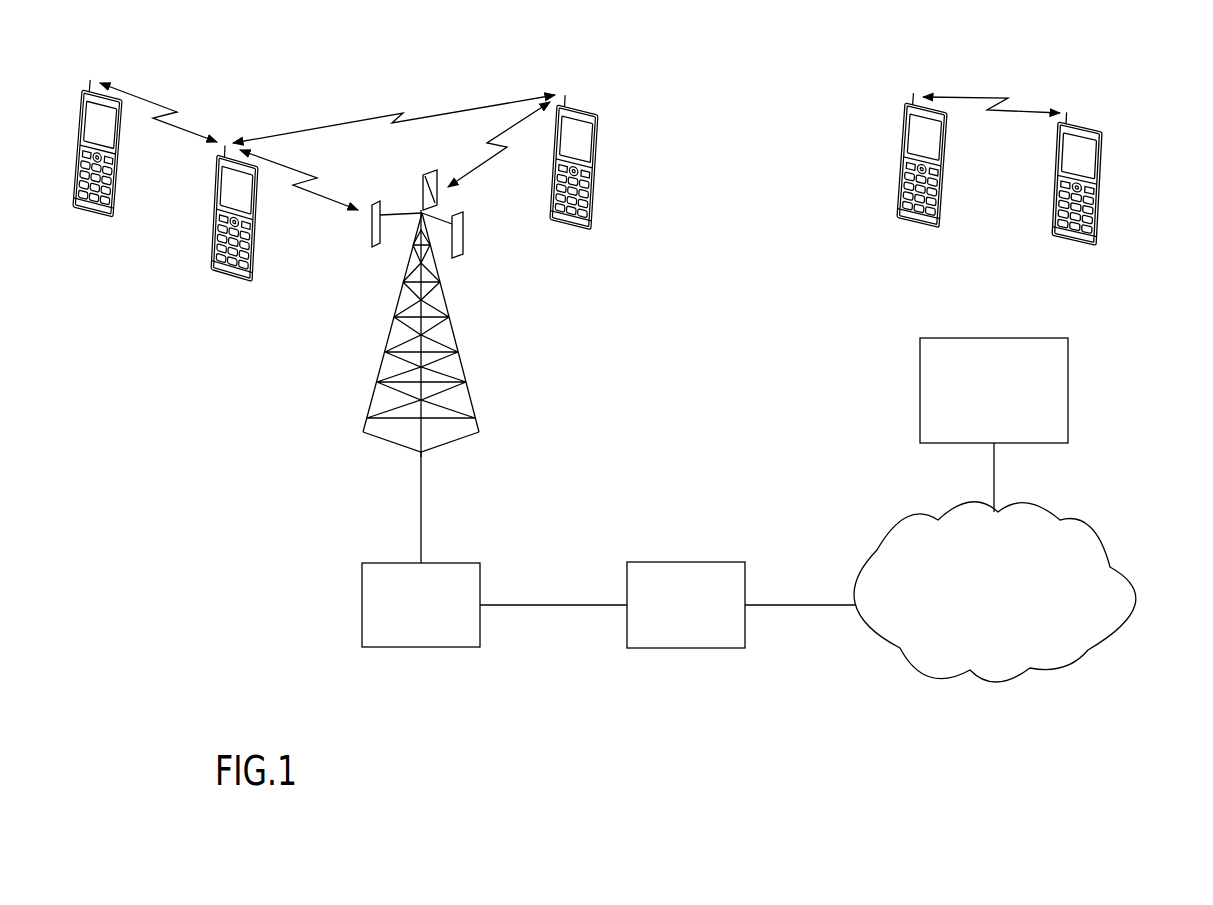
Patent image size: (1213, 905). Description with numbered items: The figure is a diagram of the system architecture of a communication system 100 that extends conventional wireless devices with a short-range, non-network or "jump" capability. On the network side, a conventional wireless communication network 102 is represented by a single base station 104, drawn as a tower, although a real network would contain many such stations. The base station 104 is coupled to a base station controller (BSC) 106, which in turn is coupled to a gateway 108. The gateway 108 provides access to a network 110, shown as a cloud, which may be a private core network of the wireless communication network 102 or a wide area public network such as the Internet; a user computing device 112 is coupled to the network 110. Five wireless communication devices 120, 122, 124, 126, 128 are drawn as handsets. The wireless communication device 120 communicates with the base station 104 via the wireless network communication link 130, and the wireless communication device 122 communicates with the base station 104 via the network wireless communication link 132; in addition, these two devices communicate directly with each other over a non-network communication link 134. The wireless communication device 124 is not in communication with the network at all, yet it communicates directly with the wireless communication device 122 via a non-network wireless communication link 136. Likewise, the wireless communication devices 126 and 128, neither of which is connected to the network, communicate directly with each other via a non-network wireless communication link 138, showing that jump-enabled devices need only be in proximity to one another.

The system 100 is at (1132, 703).
The wireless communication network 102 is at (640, 690).
The base station 104 is at (461, 360).
The base station controller (BSC) 106 is at (447, 562).
The gateway 108 is at (708, 562).
The network 110 is at (905, 512).
The user computing device 112 is at (920, 392).
The wireless communication device 120 is at (570, 236).
The wireless communication device 122 is at (229, 283).
The wireless communication device 124 is at (92, 219).
The wireless communication device 126 is at (920, 233).
The wireless communication device 128 is at (1073, 253).
The wireless network communication link 130 is at (497, 152).
The network wireless communication link 132 is at (310, 177).
The non-network communication link 134 is at (372, 117).
The non-network wireless communication link 136 is at (153, 100).
The non-network wireless communication link 138 is at (987, 93).